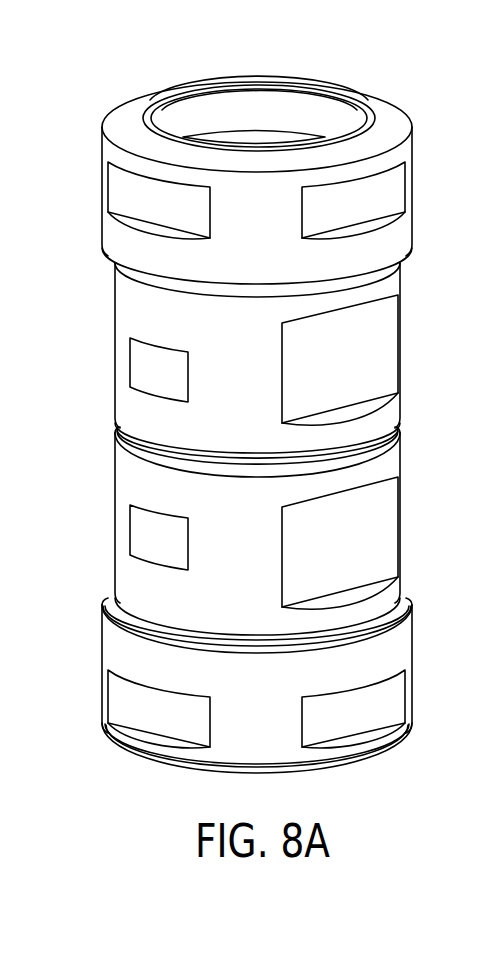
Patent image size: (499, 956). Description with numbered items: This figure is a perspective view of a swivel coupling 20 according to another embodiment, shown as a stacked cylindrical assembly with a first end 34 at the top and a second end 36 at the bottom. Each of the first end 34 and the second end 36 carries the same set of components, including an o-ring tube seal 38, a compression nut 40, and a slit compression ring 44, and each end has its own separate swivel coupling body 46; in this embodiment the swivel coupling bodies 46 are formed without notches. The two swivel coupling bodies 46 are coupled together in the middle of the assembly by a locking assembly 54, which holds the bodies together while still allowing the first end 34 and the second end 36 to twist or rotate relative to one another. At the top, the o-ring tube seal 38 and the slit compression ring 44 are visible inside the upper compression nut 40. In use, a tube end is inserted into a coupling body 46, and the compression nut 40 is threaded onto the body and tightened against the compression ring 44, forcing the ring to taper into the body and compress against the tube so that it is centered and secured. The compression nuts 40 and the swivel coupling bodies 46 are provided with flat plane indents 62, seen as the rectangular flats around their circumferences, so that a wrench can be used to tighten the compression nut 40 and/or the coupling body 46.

The swivel coupling 20 is at (259, 417).
The first end 34 is at (343, 82).
The second end 36 is at (380, 762).
The o-ring tube seal 38 is at (180, 95).
The compression nut 40 is at (117, 125).
The slit compression ring 44 is at (265, 115).
The swivel coupling body 46 is at (130, 310).
The locking assembly 54 is at (362, 447).
The flat plane indents 62 is at (135, 192).